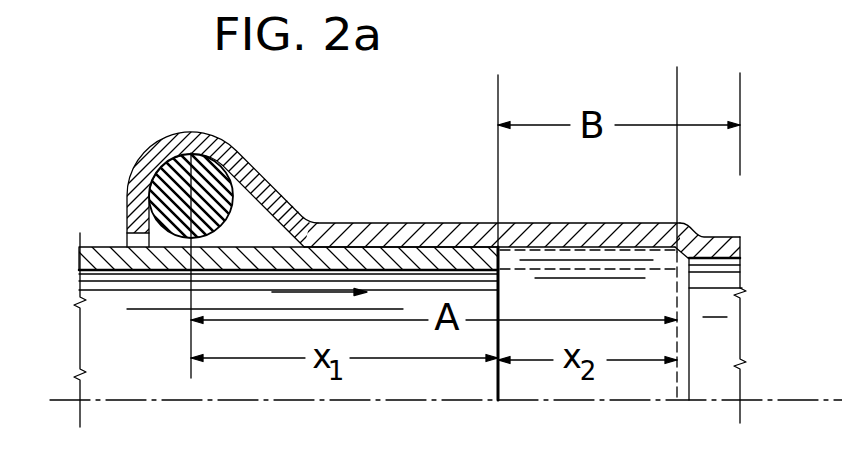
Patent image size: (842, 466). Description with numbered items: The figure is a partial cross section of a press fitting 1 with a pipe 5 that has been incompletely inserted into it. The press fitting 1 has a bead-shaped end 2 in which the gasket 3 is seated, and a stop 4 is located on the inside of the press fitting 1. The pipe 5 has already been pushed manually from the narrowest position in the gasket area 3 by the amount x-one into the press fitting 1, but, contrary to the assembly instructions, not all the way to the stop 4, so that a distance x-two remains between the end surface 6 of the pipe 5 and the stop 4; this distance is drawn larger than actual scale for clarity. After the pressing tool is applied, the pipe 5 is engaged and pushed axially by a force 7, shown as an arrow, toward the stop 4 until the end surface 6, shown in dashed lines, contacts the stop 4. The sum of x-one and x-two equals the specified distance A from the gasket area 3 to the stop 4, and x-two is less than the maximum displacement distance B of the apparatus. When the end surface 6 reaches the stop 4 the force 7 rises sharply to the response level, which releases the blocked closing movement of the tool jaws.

The press fitting 1 is at (718, 247).
The bead-shaped end 2 is at (185, 142).
The gasket 3 is at (160, 193).
The stop 4 is at (710, 232).
The pipe 5 is at (85, 260).
The end surface 6 is at (500, 387).
The force 7 is at (300, 293).